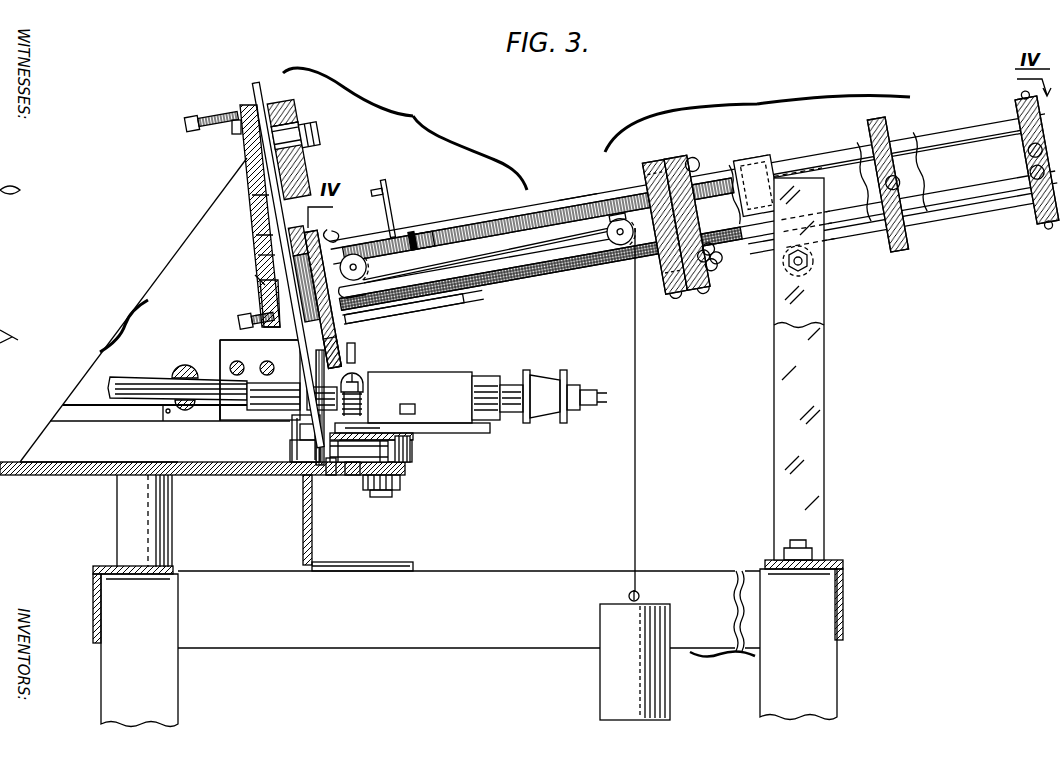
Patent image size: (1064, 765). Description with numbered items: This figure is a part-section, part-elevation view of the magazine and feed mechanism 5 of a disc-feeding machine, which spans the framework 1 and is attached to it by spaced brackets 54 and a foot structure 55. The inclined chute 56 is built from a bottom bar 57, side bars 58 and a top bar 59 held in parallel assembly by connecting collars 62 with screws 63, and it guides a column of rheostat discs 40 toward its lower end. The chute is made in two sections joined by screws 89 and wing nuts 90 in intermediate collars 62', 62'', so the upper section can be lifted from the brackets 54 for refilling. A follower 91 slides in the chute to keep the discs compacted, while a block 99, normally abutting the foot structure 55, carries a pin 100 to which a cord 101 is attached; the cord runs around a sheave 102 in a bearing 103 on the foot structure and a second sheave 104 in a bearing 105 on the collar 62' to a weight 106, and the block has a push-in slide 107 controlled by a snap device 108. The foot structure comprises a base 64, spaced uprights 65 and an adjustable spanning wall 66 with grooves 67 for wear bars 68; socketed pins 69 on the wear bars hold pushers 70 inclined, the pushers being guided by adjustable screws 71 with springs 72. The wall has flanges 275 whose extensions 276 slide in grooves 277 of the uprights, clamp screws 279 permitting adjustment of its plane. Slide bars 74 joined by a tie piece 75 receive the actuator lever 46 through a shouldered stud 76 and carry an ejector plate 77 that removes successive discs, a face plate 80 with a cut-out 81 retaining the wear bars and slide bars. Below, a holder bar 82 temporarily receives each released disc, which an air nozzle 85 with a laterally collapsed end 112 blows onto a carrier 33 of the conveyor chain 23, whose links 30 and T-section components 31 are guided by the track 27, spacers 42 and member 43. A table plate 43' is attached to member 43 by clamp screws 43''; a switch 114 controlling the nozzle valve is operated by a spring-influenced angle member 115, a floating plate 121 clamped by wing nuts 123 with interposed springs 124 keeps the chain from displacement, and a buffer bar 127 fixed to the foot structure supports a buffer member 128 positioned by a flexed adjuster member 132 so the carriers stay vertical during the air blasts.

The framework 1 is at (93, 575).
The magazine and feed mechanism 5 is at (405, 129).
The conveyor chain 23 is at (352, 451).
The track 27 is at (396, 480).
The links 30 is at (352, 476).
The T-section components 31 is at (333, 475).
The carrier 33 is at (350, 493).
The rheostat discs 40 is at (575, 205).
The spacers 42 is at (410, 456).
The member 43 is at (394, 451).
The table plate 43' is at (418, 438).
The clamp screws 43'' is at (426, 408).
The actuator lever 46 is at (300, 122).
The spaced brackets 54 is at (826, 320).
The foot structure 55 is at (110, 326).
The inclined chute 56 is at (757, 118).
The bottom bar 57 is at (547, 286).
The side bars 58 is at (936, 178).
The top bar 59 is at (481, 226).
The connecting collars 62 is at (682, 228).
The intermediate collar 62' is at (674, 235).
The intermediate collar 62'' is at (674, 216).
The screws 63 is at (850, 136).
The base 64 is at (222, 476).
The spaced uprights 65 is at (82, 378).
The spanning wall 66 is at (288, 264).
The grooves 67 is at (258, 223).
The wear bars 68 is at (256, 205).
The socketed pins 69 is at (252, 150).
The pushers 70 is at (240, 130).
The adjustable screws 71 is at (186, 126).
The springs 72 is at (228, 130).
The slide bars 74 is at (258, 84).
The tie piece 75 is at (284, 116).
The shouldered stud 76 is at (318, 131).
The ejector plate 77 is at (285, 345).
The face plate 80 is at (284, 240).
The cut-out 81 is at (292, 396).
The holder bar 82 is at (292, 441).
The air nozzle 85 is at (141, 378).
The screws 89 is at (680, 292).
The wing nuts 90 is at (705, 161).
The follower 91 is at (760, 185).
The block 99 is at (411, 226).
The lateral pin 100 is at (352, 232).
The flexible cord 101 is at (494, 250).
The sheave 102 is at (369, 268).
The bearing 103 is at (370, 289).
The second sheave 104 is at (605, 233).
The bearing 105 is at (620, 205).
The weight 106 is at (600, 690).
The push-in slide 107 is at (392, 190).
The snap device 108 is at (432, 230).
The collapsed nozzle end 112 is at (298, 428).
The switch 114 is at (478, 372).
The angle member 115 is at (363, 403).
The floating plate 121 is at (362, 427).
The wing nuts 123 is at (395, 372).
The springs 124 is at (364, 386).
The buffer bar 127 is at (405, 321).
The buffer member 128 is at (340, 345).
The adjuster member 132 is at (356, 358).
The flanges 275 is at (220, 343).
The extensions 276 is at (200, 422).
The grooves 277 is at (108, 422).
The clamp screws 279 is at (230, 367).